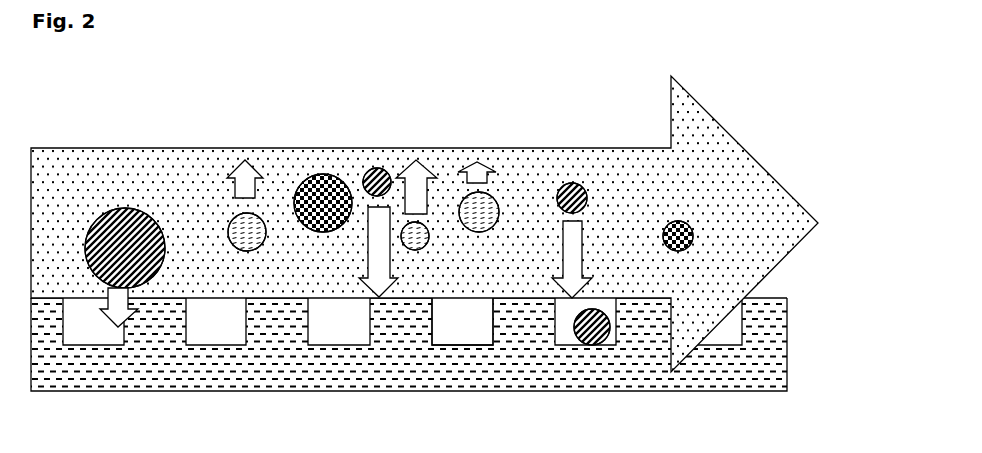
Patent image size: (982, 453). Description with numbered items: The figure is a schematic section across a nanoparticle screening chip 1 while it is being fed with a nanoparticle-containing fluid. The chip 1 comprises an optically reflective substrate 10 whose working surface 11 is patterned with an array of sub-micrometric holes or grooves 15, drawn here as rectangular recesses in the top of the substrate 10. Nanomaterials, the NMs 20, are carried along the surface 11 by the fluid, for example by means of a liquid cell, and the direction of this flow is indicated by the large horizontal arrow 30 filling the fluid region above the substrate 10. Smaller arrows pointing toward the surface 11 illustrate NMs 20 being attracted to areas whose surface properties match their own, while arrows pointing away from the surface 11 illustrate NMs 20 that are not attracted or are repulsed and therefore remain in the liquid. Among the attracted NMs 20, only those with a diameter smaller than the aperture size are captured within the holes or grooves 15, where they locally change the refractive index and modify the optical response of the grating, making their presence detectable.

The screening chip 1 is at (447, 262).
The optically reflective substrate 10 is at (447, 231).
The surface 11 is at (777, 299).
The holes or grooves 15 is at (460, 315).
The NMs 20 is at (573, 182).
The horizontal arrow 30 is at (424, 221).